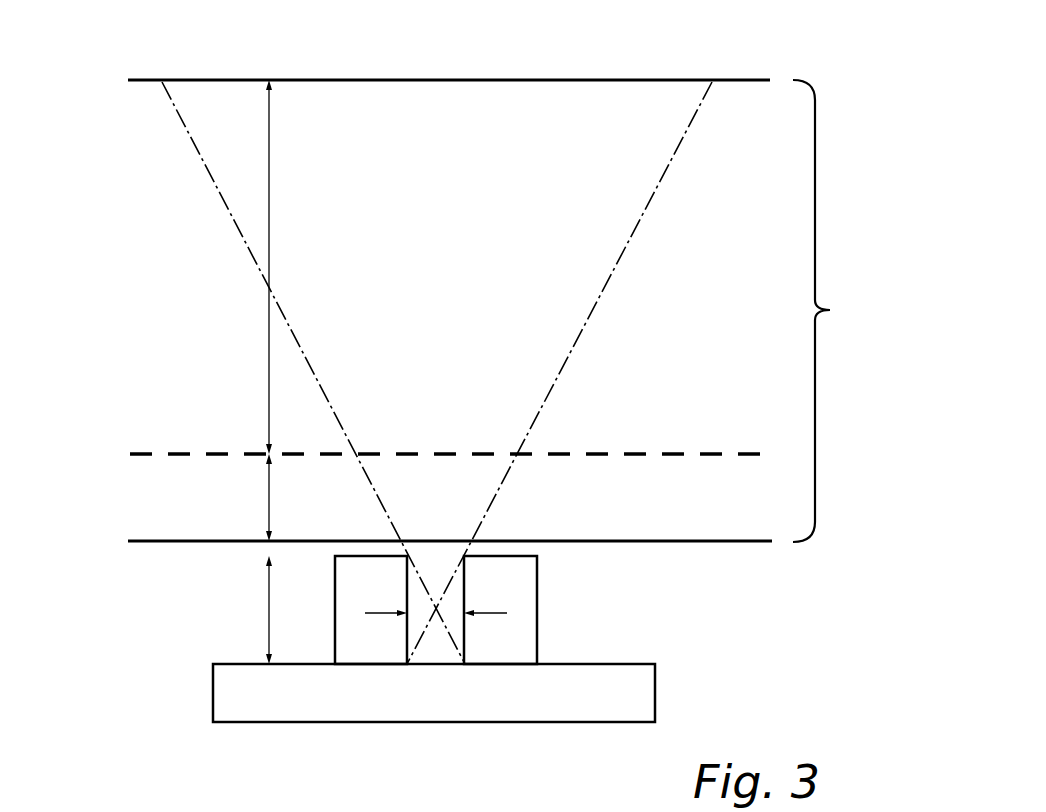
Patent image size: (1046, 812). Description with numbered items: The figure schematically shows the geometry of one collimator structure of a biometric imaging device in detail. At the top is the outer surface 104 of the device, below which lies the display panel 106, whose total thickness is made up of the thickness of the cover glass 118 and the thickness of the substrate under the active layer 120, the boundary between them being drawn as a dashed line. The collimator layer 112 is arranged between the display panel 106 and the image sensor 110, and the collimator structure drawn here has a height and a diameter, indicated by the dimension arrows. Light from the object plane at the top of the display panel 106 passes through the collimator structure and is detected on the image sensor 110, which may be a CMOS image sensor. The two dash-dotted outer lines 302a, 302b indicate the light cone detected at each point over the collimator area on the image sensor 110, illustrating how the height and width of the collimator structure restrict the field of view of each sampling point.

The outer surface 104 is at (676, 80).
The display panel 106 is at (837, 311).
The image sensor 110 is at (655, 695).
The collimator layer 112 is at (635, 611).
The cover glass 118 is at (158, 285).
The active layer 120 is at (158, 490).
The outer line 302a is at (302, 348).
The outer line 302b is at (597, 302).